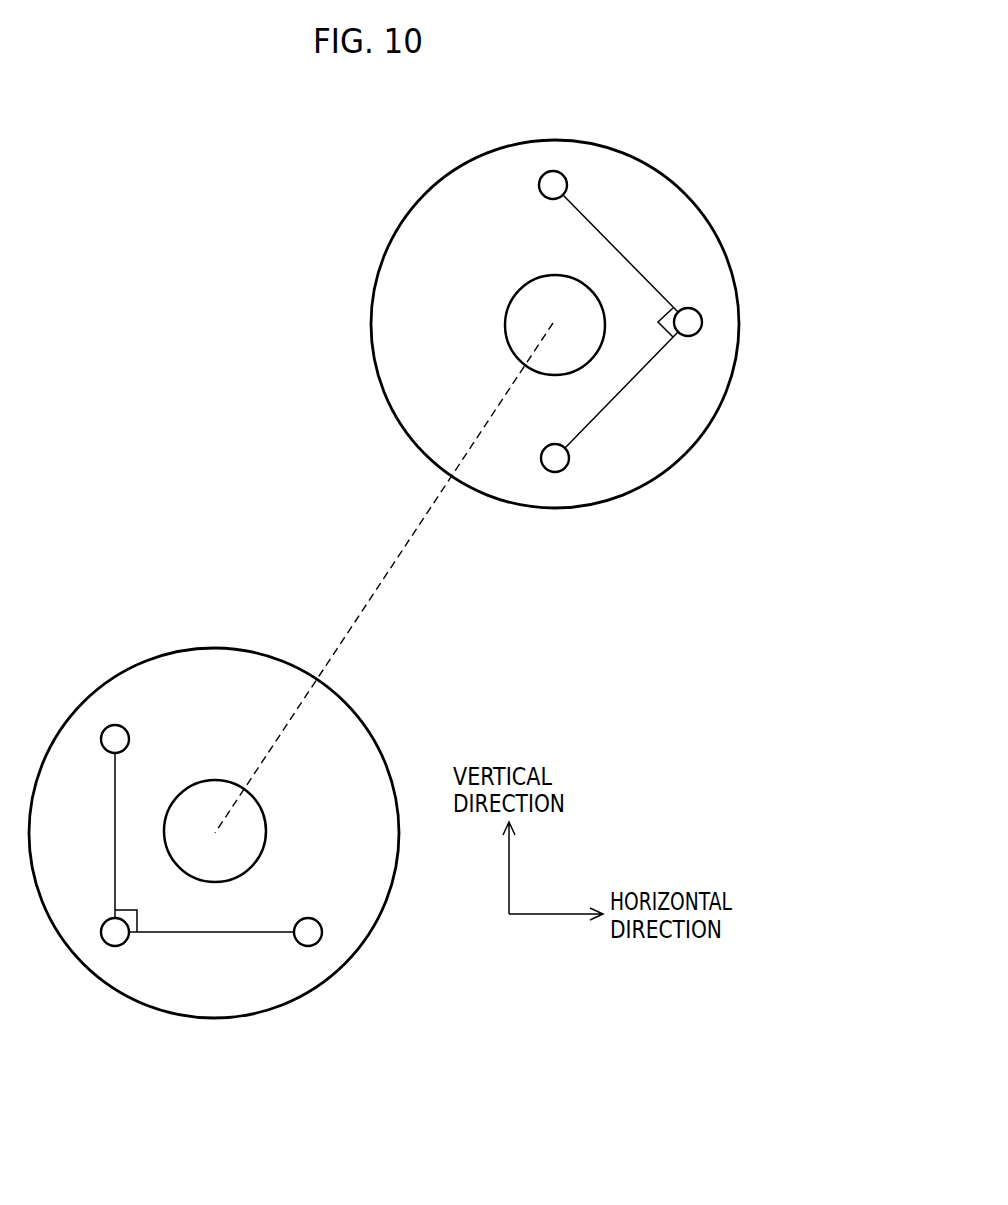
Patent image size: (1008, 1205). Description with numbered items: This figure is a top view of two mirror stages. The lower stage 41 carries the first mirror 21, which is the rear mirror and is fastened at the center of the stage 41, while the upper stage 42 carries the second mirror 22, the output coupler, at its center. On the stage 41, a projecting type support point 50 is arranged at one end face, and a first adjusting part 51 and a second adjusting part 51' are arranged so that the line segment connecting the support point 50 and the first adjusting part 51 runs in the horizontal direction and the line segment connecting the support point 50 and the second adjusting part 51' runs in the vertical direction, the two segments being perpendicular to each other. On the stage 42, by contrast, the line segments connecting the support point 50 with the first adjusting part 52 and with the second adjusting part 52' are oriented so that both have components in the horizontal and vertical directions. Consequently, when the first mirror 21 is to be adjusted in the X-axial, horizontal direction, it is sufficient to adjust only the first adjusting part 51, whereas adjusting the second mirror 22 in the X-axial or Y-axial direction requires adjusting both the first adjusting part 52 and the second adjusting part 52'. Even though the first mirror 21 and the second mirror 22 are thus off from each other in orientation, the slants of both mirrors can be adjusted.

The first mirror 21 is at (224, 864).
The second mirror 22 is at (588, 352).
The stage 41 is at (348, 765).
The stage 42 is at (650, 433).
The support point 50 is at (690, 320).
The first adjusting part 51 is at (338, 967).
The second adjusting part 51' is at (124, 689).
The first adjusting part 52 is at (557, 148).
The second adjusting part 52' is at (542, 514).